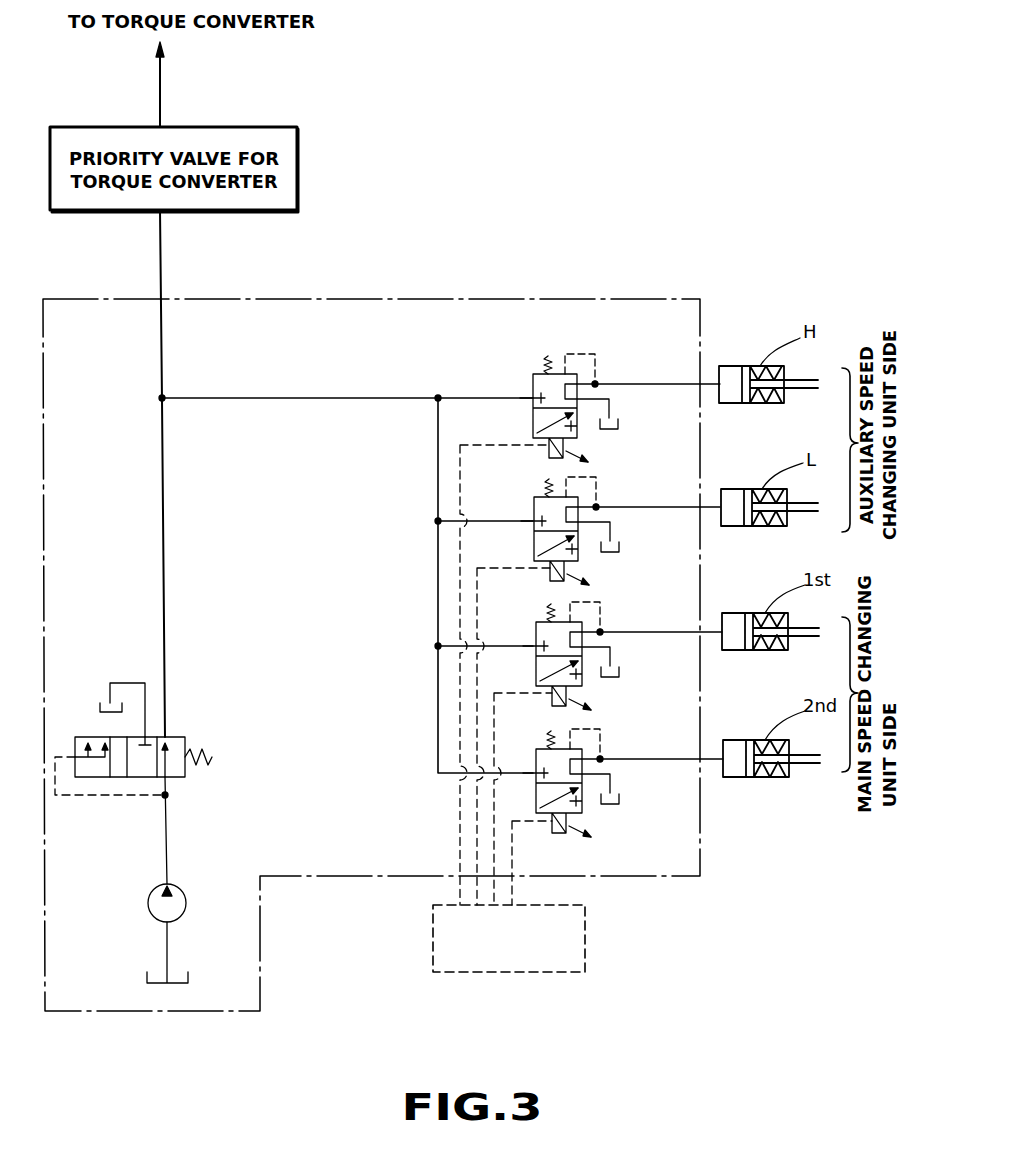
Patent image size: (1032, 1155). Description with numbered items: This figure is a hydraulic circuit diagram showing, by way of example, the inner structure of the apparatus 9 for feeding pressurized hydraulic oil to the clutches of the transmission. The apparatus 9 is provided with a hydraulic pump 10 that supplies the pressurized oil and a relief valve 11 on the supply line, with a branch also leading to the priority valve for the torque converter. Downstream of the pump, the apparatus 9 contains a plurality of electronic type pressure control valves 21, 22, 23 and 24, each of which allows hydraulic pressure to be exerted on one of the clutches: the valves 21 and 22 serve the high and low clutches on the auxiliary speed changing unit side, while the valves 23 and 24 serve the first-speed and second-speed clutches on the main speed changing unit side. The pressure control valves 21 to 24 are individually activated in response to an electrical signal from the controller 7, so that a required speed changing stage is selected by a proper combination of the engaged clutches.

The controller 7 is at (586, 935).
The apparatus for feeding pressurized hydraulic oil 9 is at (600, 299).
The hydraulic pump 10 is at (148, 903).
The relief valve 11 is at (170, 737).
The electronic type pressure control valve 21 is at (578, 419).
The electronic type pressure control valve 22 is at (579, 542).
The electronic type pressure control valve 23 is at (583, 667).
The electronic type pressure control valve 24 is at (583, 795).